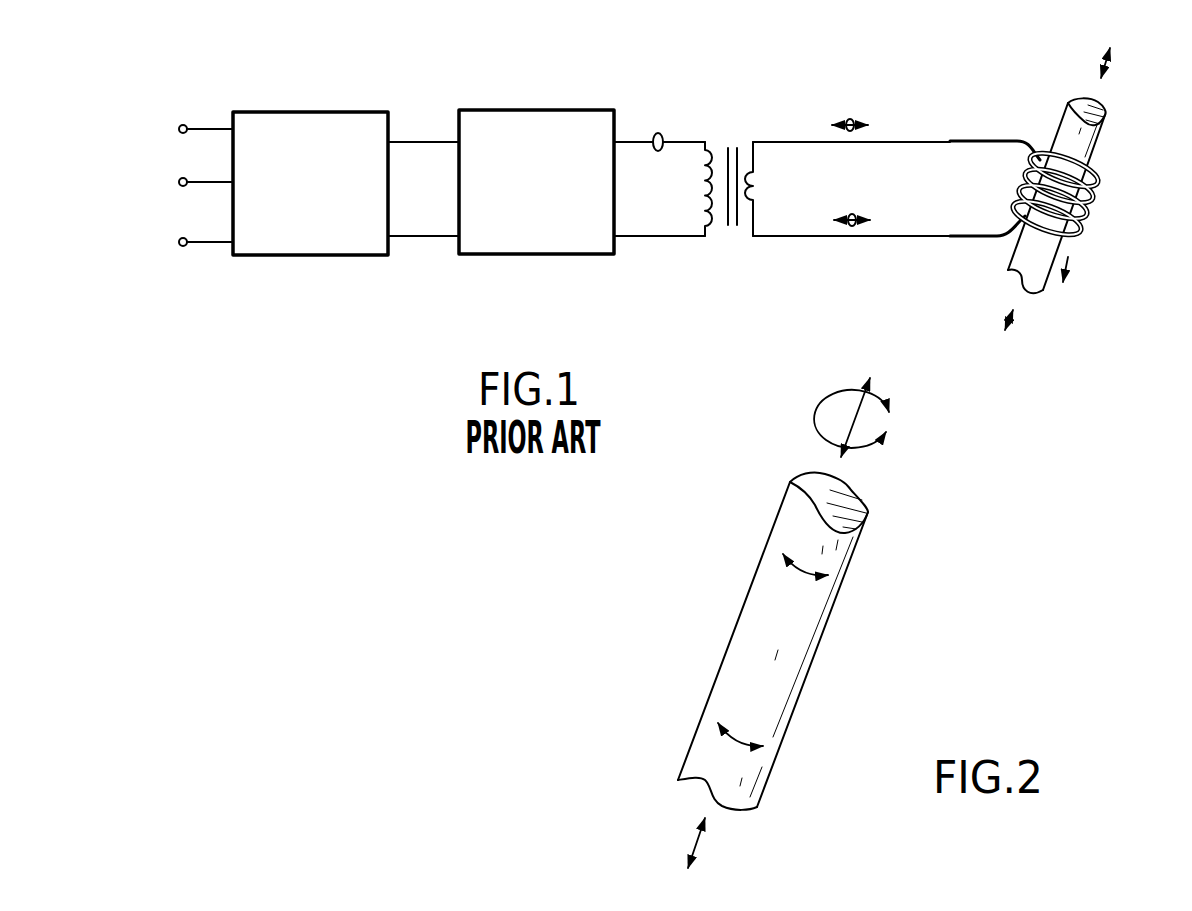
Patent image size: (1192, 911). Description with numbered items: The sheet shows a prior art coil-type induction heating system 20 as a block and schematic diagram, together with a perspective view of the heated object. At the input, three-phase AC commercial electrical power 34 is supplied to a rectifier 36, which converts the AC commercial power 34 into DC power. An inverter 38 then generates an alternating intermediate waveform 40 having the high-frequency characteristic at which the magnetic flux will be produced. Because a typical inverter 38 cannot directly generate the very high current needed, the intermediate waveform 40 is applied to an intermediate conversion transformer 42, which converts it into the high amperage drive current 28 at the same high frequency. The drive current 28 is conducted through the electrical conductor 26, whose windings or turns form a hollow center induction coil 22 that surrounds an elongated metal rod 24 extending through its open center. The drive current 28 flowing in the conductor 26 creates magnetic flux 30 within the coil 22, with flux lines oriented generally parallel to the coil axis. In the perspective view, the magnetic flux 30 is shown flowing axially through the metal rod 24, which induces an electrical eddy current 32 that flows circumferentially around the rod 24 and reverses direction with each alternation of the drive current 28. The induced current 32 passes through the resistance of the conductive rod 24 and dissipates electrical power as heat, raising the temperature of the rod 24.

In FIG. 1, the induction heating system 20 is at (418, 295).
In FIG. 1, the induction coil 22 is at (1113, 173).
In FIG. 1, the metal rod 24 is at (1100, 143).
In FIG. 2, the metal rod 24 is at (762, 582).
In FIG. 1, the electrical conductor 26 is at (1018, 139).
In FIG. 1, the drive current 28 is at (851, 119).
In FIG. 1, the magnetic flux 30 is at (1106, 62).
In FIG. 2, the magnetic flux 30 is at (850, 410).
In FIG. 2, the induced eddy current 32 is at (870, 450).
In FIG. 1, the electrical power 34 is at (172, 111).
In FIG. 1, the rectifier 36 is at (257, 245).
In FIG. 1, the inverter 38 is at (495, 244).
In FIG. 1, the intermediate waveform 40 is at (661, 133).
In FIG. 1, the intermediate conversion transformer 42 is at (692, 244).